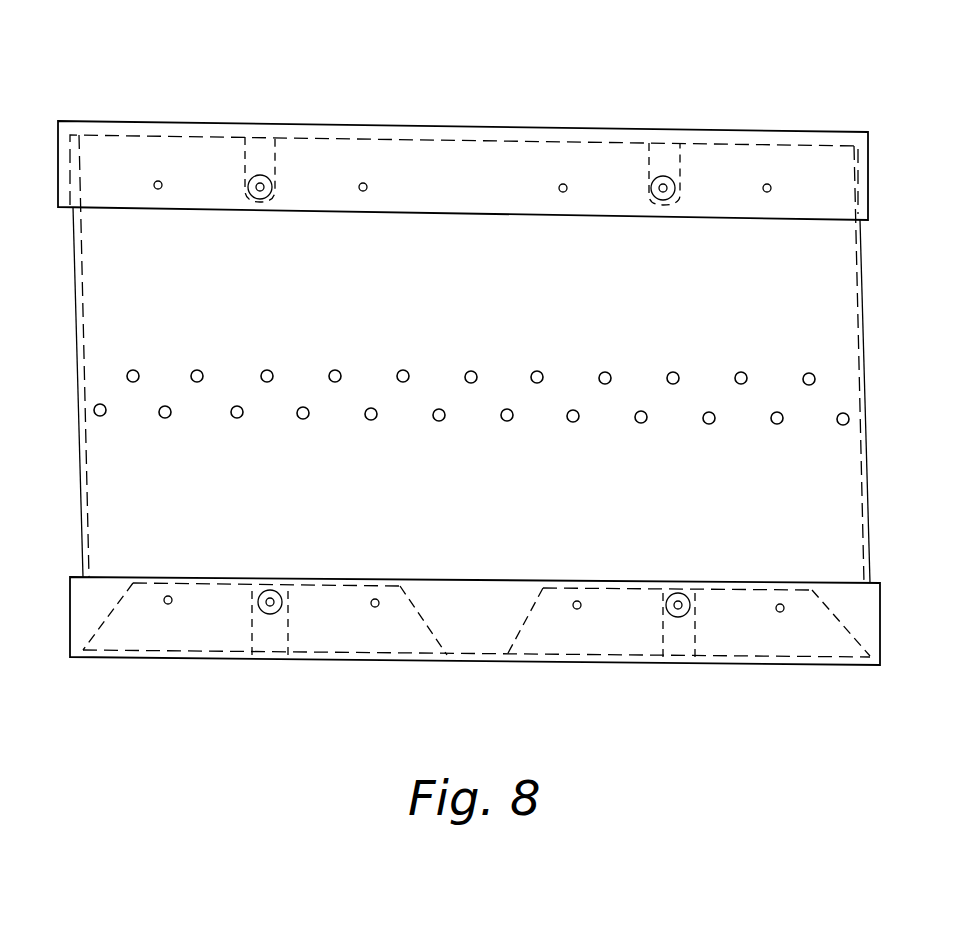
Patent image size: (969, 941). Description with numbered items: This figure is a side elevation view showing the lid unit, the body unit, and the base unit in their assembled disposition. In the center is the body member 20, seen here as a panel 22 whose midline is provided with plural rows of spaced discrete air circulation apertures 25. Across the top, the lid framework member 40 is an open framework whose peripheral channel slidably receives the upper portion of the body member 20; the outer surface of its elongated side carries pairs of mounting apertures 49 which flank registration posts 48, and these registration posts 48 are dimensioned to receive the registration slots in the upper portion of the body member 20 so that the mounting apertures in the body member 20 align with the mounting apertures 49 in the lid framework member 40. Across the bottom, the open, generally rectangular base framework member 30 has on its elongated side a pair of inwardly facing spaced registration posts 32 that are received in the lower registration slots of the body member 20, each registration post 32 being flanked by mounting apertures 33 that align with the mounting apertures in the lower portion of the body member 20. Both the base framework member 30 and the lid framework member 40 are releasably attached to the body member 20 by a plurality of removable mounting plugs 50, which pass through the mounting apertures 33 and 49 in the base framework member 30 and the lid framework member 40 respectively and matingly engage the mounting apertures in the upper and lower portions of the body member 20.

The body member 20 is at (212, 318).
The panel 22 is at (471, 359).
The air circulation apertures 25 is at (598, 375).
The base framework member 30 is at (468, 645).
The registration posts 32 is at (273, 592).
The mounting apertures 33 is at (172, 597).
The lid framework member 40 is at (92, 117).
The registration posts 48 is at (267, 123).
The mounting apertures 49 is at (146, 187).
The mounting plugs 50 is at (368, 184).